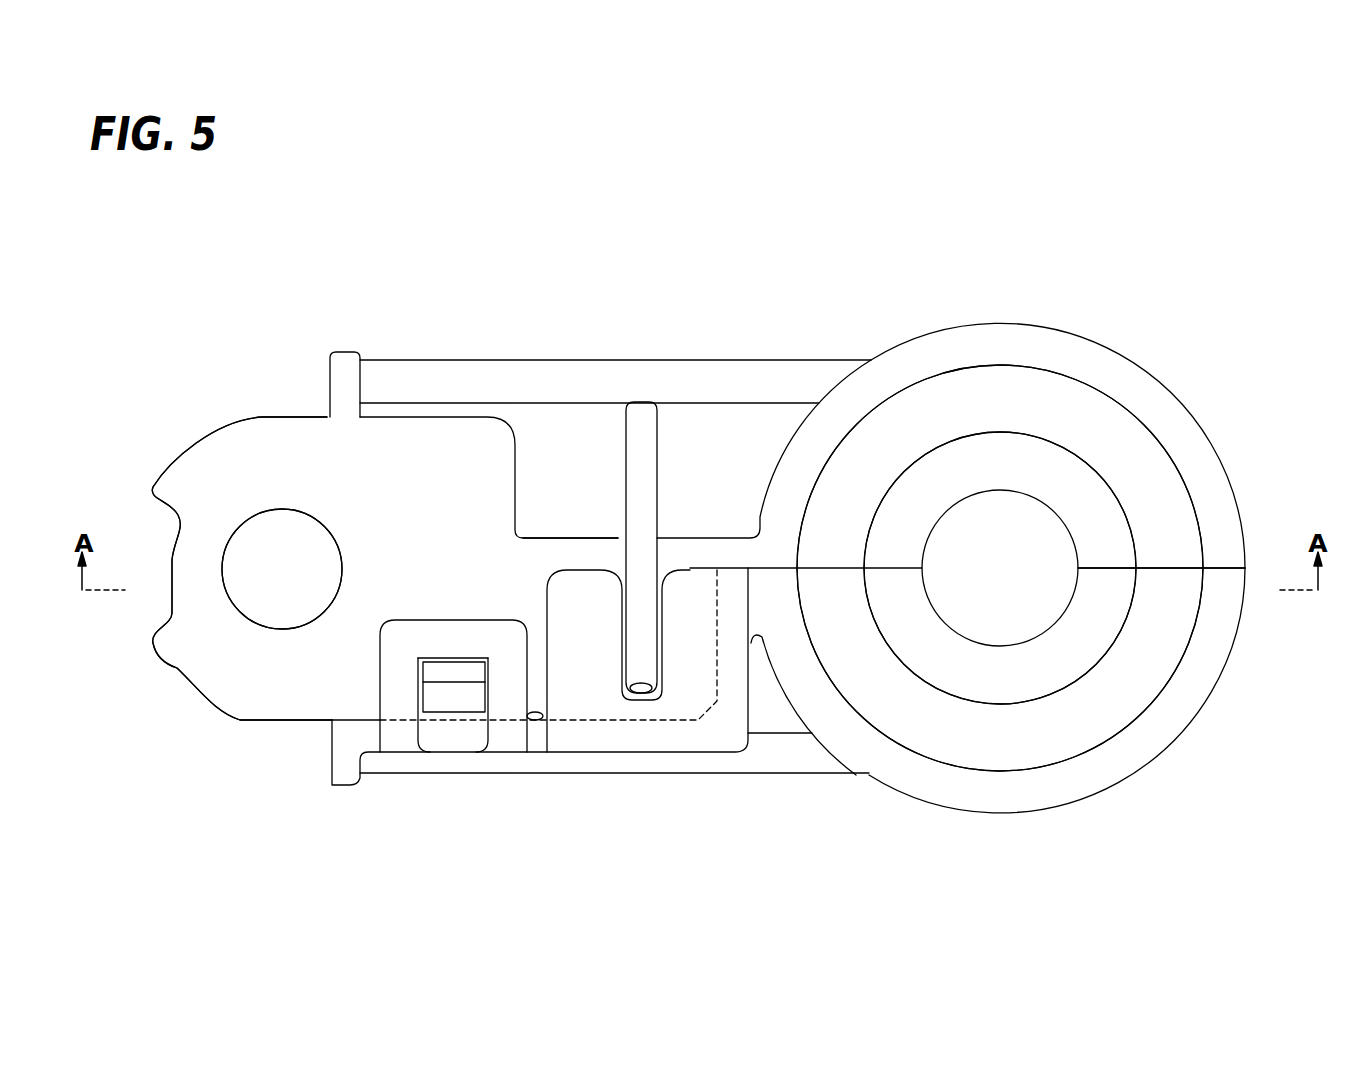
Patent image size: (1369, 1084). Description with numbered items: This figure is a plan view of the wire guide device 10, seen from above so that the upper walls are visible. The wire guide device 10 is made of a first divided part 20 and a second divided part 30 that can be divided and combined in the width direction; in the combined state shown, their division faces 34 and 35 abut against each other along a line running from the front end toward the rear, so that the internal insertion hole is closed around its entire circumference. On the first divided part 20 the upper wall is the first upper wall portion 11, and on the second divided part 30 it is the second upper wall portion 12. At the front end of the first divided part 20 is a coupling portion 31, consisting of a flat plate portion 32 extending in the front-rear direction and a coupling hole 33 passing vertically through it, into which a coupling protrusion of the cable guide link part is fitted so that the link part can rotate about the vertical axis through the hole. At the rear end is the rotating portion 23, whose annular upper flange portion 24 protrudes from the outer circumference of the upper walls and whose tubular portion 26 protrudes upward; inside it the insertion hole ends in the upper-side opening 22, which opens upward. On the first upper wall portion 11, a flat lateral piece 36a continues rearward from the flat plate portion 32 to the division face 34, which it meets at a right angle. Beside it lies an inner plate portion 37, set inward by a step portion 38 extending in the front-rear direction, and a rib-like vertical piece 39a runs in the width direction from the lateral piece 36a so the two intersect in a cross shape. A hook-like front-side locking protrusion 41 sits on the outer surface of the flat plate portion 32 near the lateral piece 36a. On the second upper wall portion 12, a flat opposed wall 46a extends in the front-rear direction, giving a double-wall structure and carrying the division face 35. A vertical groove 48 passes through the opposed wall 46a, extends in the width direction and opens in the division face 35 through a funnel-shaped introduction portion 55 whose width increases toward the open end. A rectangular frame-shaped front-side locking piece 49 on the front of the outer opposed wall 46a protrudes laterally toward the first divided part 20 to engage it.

The wire guide device 10 is at (660, 222).
The first upper wall portion 11 is at (767, 425).
The second upper wall portion 12 is at (778, 720).
The first divided part 20 is at (995, 323).
The upper-side opening 22 is at (1042, 632).
The rotating portion 23 is at (1199, 281).
The upper flange portion 24 is at (1130, 375).
The tubular portion 26 is at (1070, 407).
The second divided part 30 is at (997, 815).
The coupling portion 31 is at (272, 352).
The flat plate portion 32 is at (223, 452).
The coupling hole 33 is at (283, 512).
The division face 34 is at (1212, 572).
The division face 35 is at (1168, 568).
The lateral piece 36a is at (538, 697).
The inner plate portion 37 is at (692, 425).
The step portion 38 is at (590, 537).
The vertical piece 39a is at (639, 672).
The front-side locking protrusion 41 is at (455, 697).
The opposed wall 46a is at (710, 738).
The vertical groove 48 is at (630, 634).
The front-side locking piece 49 is at (393, 653).
The introduction portion 55 is at (608, 577).